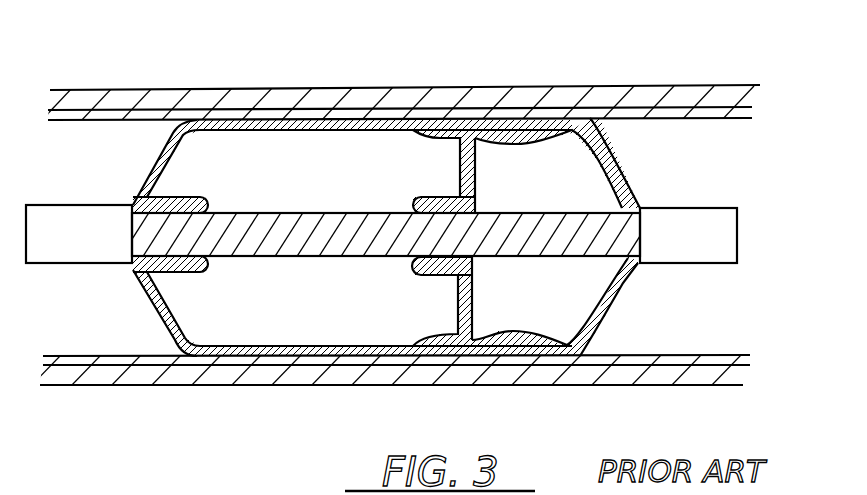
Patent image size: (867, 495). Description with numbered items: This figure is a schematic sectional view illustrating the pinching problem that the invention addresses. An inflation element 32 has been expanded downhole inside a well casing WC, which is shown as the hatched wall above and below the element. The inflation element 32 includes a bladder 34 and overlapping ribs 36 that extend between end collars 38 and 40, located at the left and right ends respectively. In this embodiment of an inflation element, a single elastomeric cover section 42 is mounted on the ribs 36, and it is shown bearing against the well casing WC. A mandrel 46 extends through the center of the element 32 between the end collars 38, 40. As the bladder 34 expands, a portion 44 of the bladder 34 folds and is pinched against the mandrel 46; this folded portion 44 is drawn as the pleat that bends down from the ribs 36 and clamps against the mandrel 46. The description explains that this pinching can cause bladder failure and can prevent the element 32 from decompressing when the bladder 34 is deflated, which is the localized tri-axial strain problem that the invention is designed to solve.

The inflation element 32 is at (132, 175).
The bladder 34 is at (234, 123).
The overlapping ribs 36 is at (433, 214).
The end collar 38 is at (72, 241).
The end collar 40 is at (698, 253).
The elastomeric cover section 42 is at (538, 122).
The portion of the bladder 44 is at (444, 195).
The mandrel 46 is at (327, 242).
The well casing WC is at (646, 97).